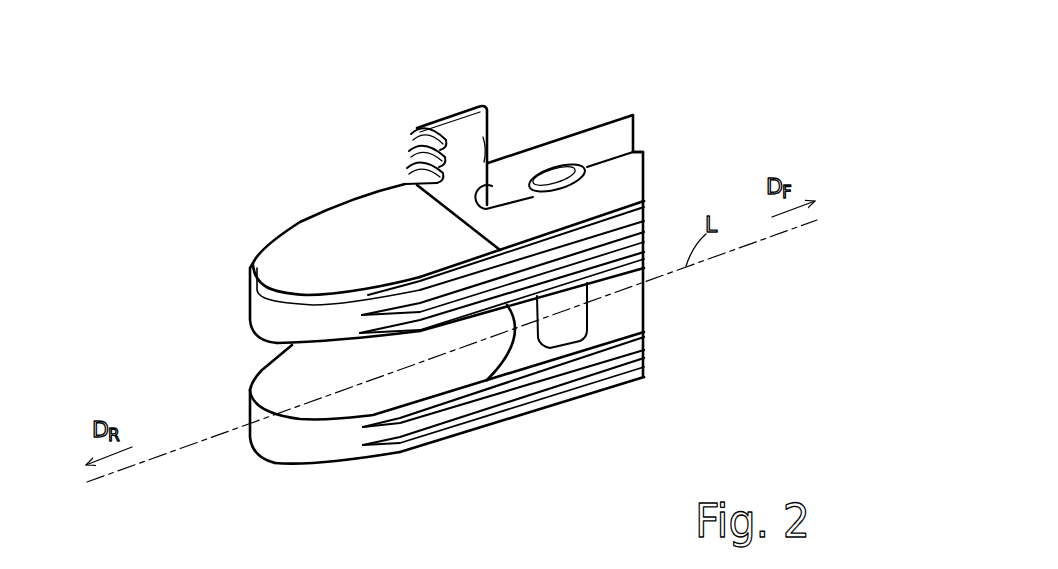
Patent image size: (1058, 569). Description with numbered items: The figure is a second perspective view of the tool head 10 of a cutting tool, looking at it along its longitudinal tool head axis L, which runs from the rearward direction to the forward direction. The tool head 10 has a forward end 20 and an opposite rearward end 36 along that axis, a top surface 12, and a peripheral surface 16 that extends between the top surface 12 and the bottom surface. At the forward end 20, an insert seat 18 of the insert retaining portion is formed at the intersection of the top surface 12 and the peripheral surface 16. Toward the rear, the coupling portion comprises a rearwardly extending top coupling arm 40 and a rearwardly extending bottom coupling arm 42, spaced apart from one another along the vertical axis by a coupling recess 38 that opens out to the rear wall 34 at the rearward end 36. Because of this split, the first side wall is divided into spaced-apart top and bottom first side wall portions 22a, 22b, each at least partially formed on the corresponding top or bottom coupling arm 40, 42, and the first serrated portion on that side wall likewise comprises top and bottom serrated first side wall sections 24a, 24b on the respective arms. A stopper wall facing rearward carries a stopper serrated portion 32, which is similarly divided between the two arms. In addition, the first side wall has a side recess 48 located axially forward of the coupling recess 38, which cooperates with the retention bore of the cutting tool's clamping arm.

The tool head 10 is at (183, 131).
The top surface 12 is at (352, 222).
The peripheral surface 16 is at (628, 310).
The insert seat 18 is at (576, 148).
The forward end 20 is at (647, 107).
The top first side wall portion 22a is at (428, 287).
The bottom first side wall portion 22b is at (432, 430).
The top serrated first side wall section 24a is at (571, 258).
The bottom serrated first side wall section 24b is at (525, 393).
The stopper serrated portion 32 is at (410, 134).
The rear wall 34 is at (267, 440).
The rearward end 36 is at (215, 290).
The coupling recess 38 is at (293, 376).
The top coupling arm 40 is at (268, 312).
The bottom coupling arm 42 is at (253, 437).
The side recess 48 is at (565, 317).